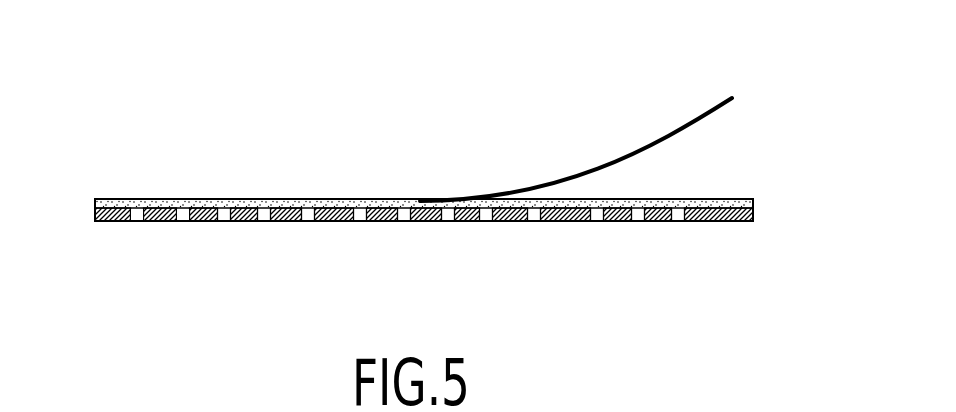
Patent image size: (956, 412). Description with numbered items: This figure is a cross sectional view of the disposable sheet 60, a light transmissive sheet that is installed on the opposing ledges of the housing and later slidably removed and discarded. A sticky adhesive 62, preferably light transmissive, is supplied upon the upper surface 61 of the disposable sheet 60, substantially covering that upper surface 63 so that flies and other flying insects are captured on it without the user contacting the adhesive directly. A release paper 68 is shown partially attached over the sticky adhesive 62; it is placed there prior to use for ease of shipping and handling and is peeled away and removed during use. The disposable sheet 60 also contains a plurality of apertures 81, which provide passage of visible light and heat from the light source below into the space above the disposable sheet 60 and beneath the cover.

The disposable sheet 60 is at (134, 239).
The upper surface 61 is at (742, 201).
The sticky adhesive 62 is at (715, 200).
The upper surface 63 is at (723, 222).
The release paper 68 is at (702, 113).
The apertures 81 is at (403, 222).